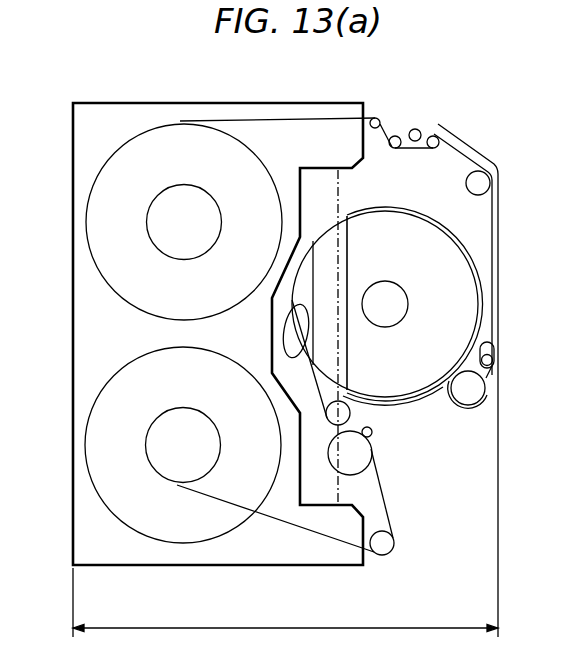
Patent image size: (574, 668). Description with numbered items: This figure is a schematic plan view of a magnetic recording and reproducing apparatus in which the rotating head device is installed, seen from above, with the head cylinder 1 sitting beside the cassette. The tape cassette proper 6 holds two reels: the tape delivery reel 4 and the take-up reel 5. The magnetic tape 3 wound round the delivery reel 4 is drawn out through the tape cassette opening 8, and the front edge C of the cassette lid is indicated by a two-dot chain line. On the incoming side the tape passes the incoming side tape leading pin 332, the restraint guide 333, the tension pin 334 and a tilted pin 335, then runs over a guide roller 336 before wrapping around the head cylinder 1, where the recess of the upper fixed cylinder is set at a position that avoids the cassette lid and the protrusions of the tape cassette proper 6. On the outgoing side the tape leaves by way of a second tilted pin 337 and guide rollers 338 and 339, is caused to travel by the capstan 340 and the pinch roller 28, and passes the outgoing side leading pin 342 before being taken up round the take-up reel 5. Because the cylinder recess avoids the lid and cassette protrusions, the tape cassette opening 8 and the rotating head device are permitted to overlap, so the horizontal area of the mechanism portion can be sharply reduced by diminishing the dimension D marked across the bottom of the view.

The rotary head drum 1 is at (428, 304).
The magnetic tape 3 is at (478, 156).
The tape delivery reel 4 is at (195, 198).
The take-up reel 5 is at (191, 478).
The tape cassette proper 6 is at (87, 357).
The tape cassette opening 8 is at (290, 328).
The pinch roller 28 is at (356, 464).
The incoming side tape leading pin 332 is at (374, 117).
The restraint guide 333 is at (393, 136).
The tension pin 334 is at (415, 128).
The tilted pin 335 is at (438, 131).
The guide roller 336 is at (484, 186).
The tilted pin 337 is at (495, 353).
The guide roller 338 is at (475, 392).
The guide roller 339 is at (345, 413).
The capstan 340 is at (372, 436).
The outgoing side leading pin 342 is at (389, 543).
The front edge of cassette lid C is at (337, 188).
The dimension D is at (285, 602).